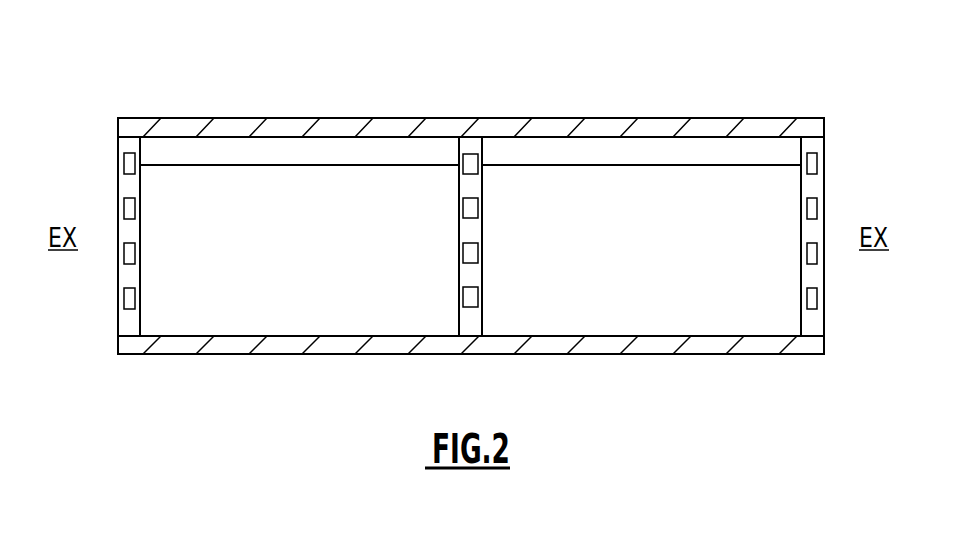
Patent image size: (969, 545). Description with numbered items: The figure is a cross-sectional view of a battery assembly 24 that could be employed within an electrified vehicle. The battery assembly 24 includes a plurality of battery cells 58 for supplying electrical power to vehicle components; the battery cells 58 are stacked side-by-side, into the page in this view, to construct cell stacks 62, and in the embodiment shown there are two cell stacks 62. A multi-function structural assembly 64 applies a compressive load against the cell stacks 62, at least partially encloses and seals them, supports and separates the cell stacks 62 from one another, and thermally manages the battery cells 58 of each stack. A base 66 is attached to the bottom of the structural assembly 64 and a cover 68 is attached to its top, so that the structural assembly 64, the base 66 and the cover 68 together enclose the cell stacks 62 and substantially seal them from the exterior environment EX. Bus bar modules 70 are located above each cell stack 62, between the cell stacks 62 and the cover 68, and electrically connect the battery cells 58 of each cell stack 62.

The battery assembly 24 is at (437, 98).
The battery cells 58 is at (317, 250).
The cell stacks 62 is at (283, 318).
The multi-function structural assembly 64 is at (118, 212).
The base 66 is at (427, 348).
The cover 68 is at (494, 125).
The bus bar modules 70 is at (290, 153).